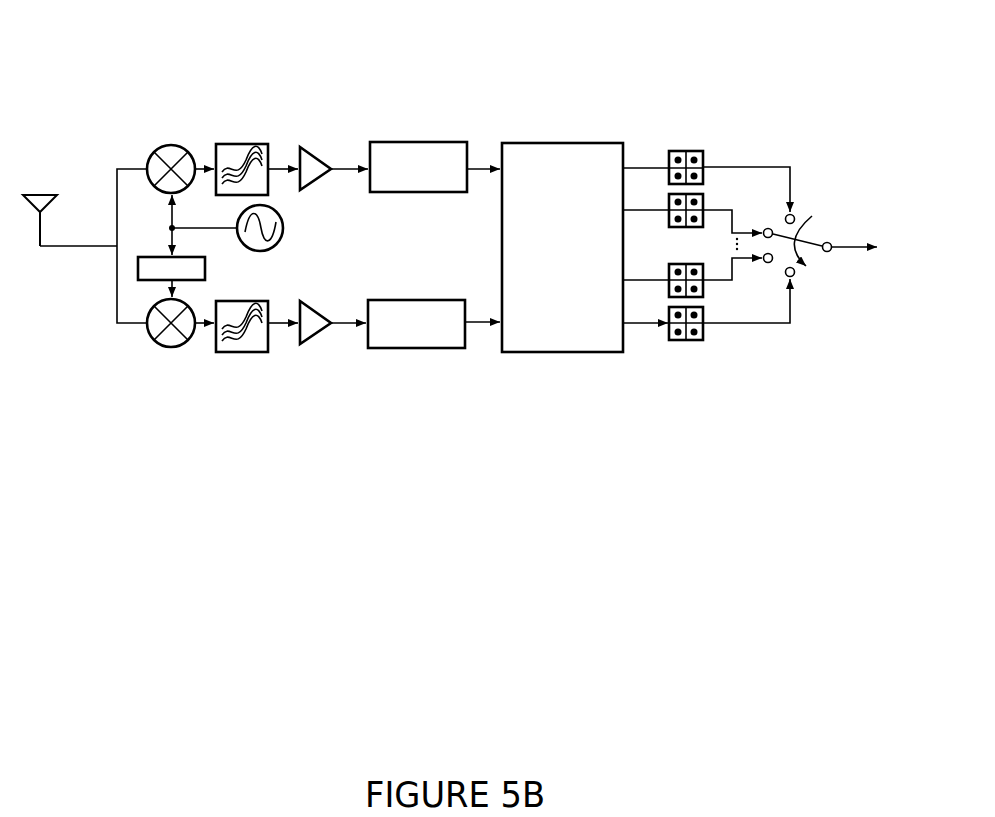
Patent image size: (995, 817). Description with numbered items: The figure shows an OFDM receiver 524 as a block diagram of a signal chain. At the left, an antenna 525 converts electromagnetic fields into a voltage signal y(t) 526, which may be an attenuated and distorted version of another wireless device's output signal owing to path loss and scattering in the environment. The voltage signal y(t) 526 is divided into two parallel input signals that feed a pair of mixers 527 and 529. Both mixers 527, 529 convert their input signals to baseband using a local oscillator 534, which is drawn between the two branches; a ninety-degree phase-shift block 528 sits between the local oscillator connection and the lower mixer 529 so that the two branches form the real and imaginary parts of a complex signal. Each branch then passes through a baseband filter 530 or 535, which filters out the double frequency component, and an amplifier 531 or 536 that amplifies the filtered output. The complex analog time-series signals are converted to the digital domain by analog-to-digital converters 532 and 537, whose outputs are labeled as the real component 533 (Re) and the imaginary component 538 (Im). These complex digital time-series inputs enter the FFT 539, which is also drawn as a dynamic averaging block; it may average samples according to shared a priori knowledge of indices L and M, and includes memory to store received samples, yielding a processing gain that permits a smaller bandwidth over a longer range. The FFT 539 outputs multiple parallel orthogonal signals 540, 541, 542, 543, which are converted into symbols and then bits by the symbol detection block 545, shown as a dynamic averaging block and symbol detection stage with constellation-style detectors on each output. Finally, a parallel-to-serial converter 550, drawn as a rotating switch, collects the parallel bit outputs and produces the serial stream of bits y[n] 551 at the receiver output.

The OFDM receiver 524 is at (98, 42).
The antenna 525 is at (40, 210).
The voltage signal y(t) 526 is at (93, 246).
The mixer 527 is at (180, 158).
The 90 degree phase shifter 528 is at (171, 277).
The mixer 529 is at (180, 335).
The baseband filter 530 is at (257, 159).
The amplifier 531 is at (334, 157).
The analog-to-digital converter 532 is at (418, 167).
The real signal Re 533 is at (483, 149).
The local oscillator 534 is at (252, 225).
The baseband filter 535 is at (257, 336).
The amplifier 536 is at (333, 336).
The analog-to-digital converter 537 is at (416, 324).
The imaginary signal Im 538 is at (482, 344).
The FFT 539 is at (585, 247).
The parallel orthogonal signal 540 is at (729, 181).
The parallel orthogonal signal 541 is at (715, 213).
The parallel orthogonal signal 542 is at (715, 279).
The parallel orthogonal signal 543 is at (729, 311).
The symbol detection block 545 is at (687, 320).
The parallel to serial converter 550 is at (813, 275).
The serial stream of bits y[n] 551 is at (869, 252).